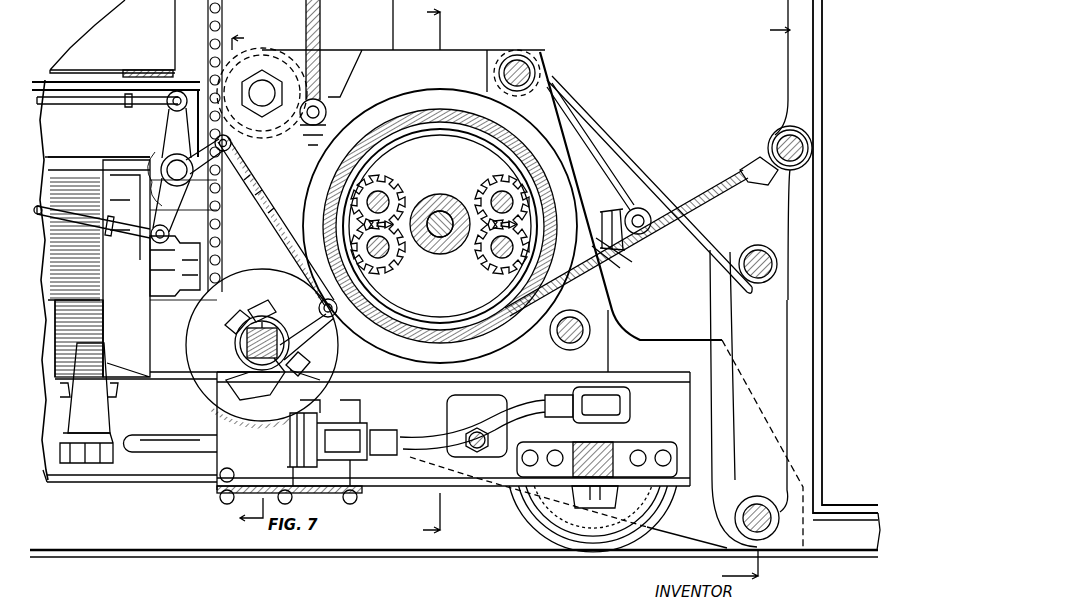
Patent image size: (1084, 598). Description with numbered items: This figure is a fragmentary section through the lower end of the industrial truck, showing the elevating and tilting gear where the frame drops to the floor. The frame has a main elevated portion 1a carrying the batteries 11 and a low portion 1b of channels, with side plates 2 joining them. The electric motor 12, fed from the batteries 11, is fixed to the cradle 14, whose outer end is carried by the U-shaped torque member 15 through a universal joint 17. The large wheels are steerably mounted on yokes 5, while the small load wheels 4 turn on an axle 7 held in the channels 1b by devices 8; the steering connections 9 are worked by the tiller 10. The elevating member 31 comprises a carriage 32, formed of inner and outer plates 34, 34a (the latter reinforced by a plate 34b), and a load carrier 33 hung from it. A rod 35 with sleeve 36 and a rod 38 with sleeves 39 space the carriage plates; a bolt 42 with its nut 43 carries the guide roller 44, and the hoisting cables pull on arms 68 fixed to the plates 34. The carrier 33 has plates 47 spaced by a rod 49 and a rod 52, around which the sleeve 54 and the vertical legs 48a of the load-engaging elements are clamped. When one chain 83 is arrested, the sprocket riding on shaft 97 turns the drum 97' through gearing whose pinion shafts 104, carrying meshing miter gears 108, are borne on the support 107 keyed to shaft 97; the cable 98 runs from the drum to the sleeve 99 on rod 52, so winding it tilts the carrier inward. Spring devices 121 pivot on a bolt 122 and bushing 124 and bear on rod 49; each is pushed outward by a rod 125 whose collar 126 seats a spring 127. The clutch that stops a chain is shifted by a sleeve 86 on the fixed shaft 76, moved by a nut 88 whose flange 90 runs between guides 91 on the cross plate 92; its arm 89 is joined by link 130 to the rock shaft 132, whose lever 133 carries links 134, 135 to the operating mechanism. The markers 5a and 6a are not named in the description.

The power supply 11 is at (104, 16).
The main or elevated frame portion 1a is at (198, 82).
The link 134 is at (92, 104).
The lever 133 is at (158, 122).
The rock shaft 132 is at (158, 145).
The electric motor 12 is at (70, 158).
The link 135 is at (78, 228).
The side plates 2 is at (145, 300).
The cradle 14 is at (50, 300).
The torque member 15 is at (92, 410).
The universal joint 17 is at (110, 427).
The steering connections 9 is at (183, 433).
The guides 91 is at (216, 460).
The cross plate 92 is at (212, 498).
The link 130 is at (262, 222).
The chains 83 is at (222, 258).
The shaft 76 is at (236, 360).
The sleeve 86 is at (262, 304).
The nut 88 is at (232, 341).
The arm 89 is at (304, 316).
The flange 90 is at (306, 370).
The lever 6a is at (292, 208).
The nut 43 is at (300, 125).
The roller 44 is at (256, 45).
The bolt 42 is at (266, 70).
The yokes 5 is at (233, 277).
The elevating member 31 is at (403, 48).
The arms 68 is at (358, 72).
The reinforcing plate 34b is at (350, 50).
The tiller 10 is at (412, 271).
The bushing 124 is at (518, 55).
The bolt 122 is at (545, 62).
The drum 97' is at (440, 212).
The shaft 97 is at (440, 217).
The pinion shaft 104 is at (500, 265).
The miter gears 108 is at (392, 275).
The intermediate member or support 107 is at (450, 258).
The spring-operated devices 121 is at (634, 145).
The plates 47 is at (710, 282).
The cable 98 is at (708, 188).
The sleeve 99 is at (742, 160).
The rod 52 is at (808, 132).
The sleeve 54 is at (806, 144).
The rod 125 is at (612, 215).
The collar 126 is at (622, 212).
The spring 127 is at (626, 260).
The carriage 32 is at (624, 274).
The inner plates 34 is at (600, 306).
The outer plates 34a is at (655, 345).
The rod 38 is at (552, 342).
The sleeves 39 is at (580, 350).
The rod 49 is at (762, 248).
The vertical legs 48a is at (818, 294).
The load carrier 33 is at (844, 339).
The rod 35 is at (800, 530).
The sleeve 36 is at (770, 550).
The section line 5a is at (727, 300).
The load wheels 4 is at (530, 530).
The devices 8 is at (523, 490).
The axle 7 is at (630, 425).
The low frame portion 1b is at (415, 488).